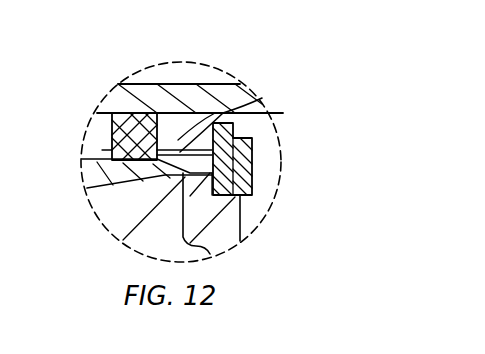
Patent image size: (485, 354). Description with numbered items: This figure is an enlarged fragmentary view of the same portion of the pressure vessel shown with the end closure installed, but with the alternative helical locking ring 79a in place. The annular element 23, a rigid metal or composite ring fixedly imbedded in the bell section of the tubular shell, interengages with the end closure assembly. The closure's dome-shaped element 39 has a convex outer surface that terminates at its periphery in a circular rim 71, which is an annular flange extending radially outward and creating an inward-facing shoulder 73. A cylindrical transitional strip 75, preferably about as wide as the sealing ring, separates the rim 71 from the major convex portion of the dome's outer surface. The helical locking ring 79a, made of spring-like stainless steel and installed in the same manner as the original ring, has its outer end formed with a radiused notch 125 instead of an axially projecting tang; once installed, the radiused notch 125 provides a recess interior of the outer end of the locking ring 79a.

The annular element 23 is at (190, 65).
The dome-shaped element 39 is at (62, 185).
The circular rim 71 is at (250, 112).
The inward-facing shoulder 73 is at (135, 160).
The cylindrical transitional strip 75 is at (123, 157).
The radiused notch 125 is at (253, 143).
The helical locking ring 79a is at (252, 196).